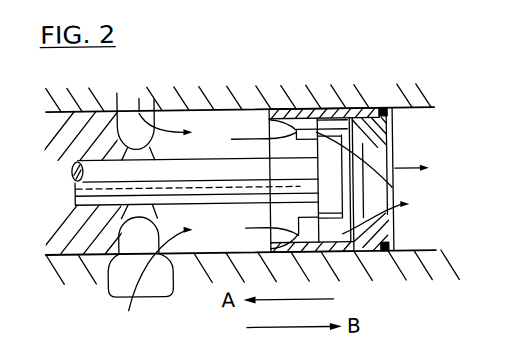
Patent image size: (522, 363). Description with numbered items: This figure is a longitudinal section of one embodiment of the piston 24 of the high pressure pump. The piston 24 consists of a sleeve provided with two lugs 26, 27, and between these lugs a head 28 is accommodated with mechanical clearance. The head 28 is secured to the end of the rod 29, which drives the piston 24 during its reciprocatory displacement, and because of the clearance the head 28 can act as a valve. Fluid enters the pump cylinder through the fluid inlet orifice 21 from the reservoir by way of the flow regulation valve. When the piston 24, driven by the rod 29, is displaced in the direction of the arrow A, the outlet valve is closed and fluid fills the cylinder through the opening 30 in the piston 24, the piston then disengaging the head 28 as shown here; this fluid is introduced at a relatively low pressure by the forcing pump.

The fluid inlet orifice 21 is at (118, 92).
The piston 24 is at (368, 258).
The lug 26 is at (396, 133).
The lug 27 is at (305, 134).
The head 28 is at (360, 140).
The rod 29 is at (74, 189).
The opening 30 is at (392, 189).